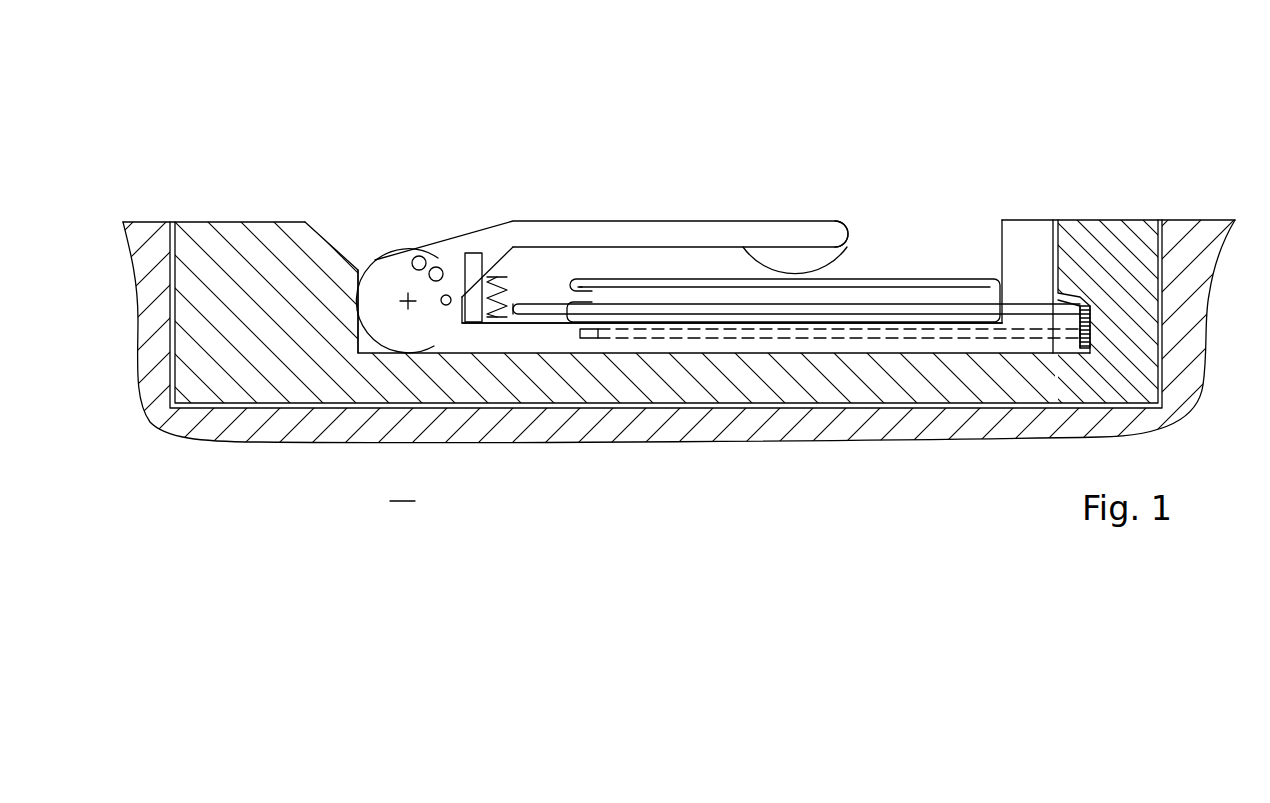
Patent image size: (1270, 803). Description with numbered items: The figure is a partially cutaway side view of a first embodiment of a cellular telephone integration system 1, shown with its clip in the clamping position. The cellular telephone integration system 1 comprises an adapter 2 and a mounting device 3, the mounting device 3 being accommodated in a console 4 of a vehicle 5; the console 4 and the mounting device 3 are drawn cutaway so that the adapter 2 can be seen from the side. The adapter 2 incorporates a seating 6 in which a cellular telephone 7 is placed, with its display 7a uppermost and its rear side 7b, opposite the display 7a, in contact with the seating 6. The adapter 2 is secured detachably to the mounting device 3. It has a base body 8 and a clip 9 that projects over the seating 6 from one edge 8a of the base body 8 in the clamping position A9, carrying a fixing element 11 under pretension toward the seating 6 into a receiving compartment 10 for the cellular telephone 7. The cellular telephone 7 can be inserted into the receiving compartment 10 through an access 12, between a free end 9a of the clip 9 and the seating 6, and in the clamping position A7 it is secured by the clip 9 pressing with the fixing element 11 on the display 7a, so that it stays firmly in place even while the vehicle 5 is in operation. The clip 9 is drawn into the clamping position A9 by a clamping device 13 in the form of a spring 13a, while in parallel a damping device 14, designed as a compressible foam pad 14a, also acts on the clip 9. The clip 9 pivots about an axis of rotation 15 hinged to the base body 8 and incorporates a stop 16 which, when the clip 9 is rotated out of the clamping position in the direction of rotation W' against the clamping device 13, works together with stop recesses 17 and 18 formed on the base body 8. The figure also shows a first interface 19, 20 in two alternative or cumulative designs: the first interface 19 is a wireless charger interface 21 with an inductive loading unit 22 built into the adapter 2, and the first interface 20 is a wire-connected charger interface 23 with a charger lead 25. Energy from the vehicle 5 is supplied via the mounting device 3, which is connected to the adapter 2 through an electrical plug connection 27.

The cellular telephone integration system 1 is at (997, 70).
The adapter 2 is at (1015, 235).
The mounting device 3 is at (1090, 226).
The console 4 is at (1188, 235).
The vehicle 5 is at (402, 485).
The seating 6 is at (530, 303).
The cellular telephone 7 is at (912, 290).
The display 7a is at (868, 275).
The rear side 7b is at (627, 325).
The base body 8 is at (1035, 253).
The edge 8a is at (383, 278).
The clip 9 is at (665, 220).
The free end 9a is at (828, 196).
The receiving compartment 10 is at (566, 298).
The fixing element 11 is at (793, 262).
The access 12 is at (949, 231).
The clamping device 13 is at (525, 231).
The spring 13a is at (505, 276).
The damping device 14 is at (480, 370).
The compressible foam pad 14a is at (477, 325).
The axis of rotation 15 is at (405, 308).
The stop 16 is at (445, 306).
The stop recess 17 is at (438, 267).
The stop recess 18 is at (419, 256).
The first interface 19 is at (570, 410).
The first interface 20 is at (568, 213).
The wireless charger interface 21 is at (564, 337).
The inductive loading unit 22 is at (765, 340).
The wire-connected charger interface 23 is at (530, 282).
The charger lead 25 is at (615, 280).
The electrical plug connection 27 is at (1075, 292).
The clamping position A7 is at (892, 233).
The clamping position A9 is at (736, 196).
The direction of rotation W' is at (465, 162).